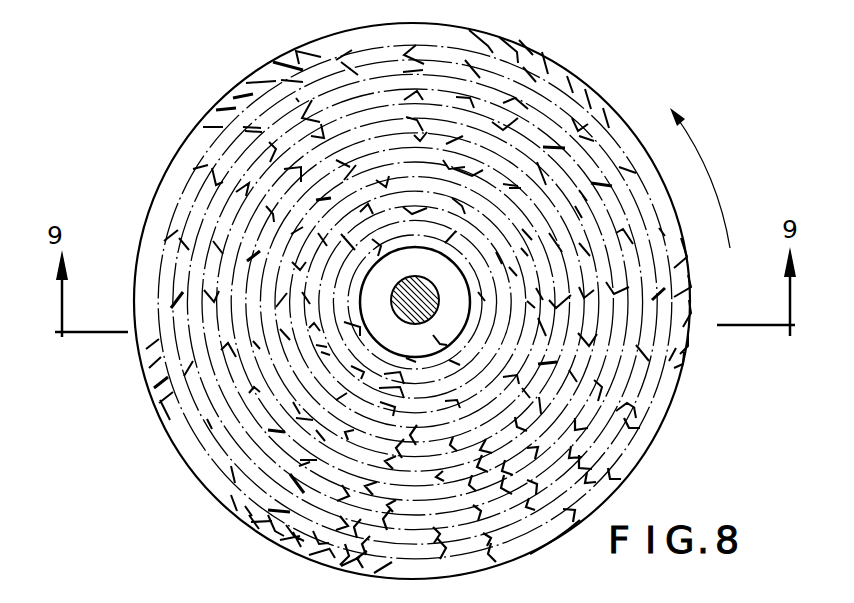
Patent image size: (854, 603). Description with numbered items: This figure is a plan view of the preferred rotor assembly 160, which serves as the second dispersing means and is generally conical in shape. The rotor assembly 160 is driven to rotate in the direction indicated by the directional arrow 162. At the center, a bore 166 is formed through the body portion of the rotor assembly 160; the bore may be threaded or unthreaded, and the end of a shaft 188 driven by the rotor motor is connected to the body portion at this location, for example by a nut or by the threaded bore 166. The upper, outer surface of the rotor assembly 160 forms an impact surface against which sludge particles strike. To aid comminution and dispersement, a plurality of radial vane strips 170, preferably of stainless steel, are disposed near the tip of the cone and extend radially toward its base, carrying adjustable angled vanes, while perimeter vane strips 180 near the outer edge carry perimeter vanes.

The rotor assembly 160 is at (175, 469).
The directional arrow 162 is at (712, 181).
The bore 166 is at (428, 283).
The radial vane strips 170 is at (373, 153).
The perimeter vane strips 180 is at (538, 561).
The shaft 188 is at (410, 312).